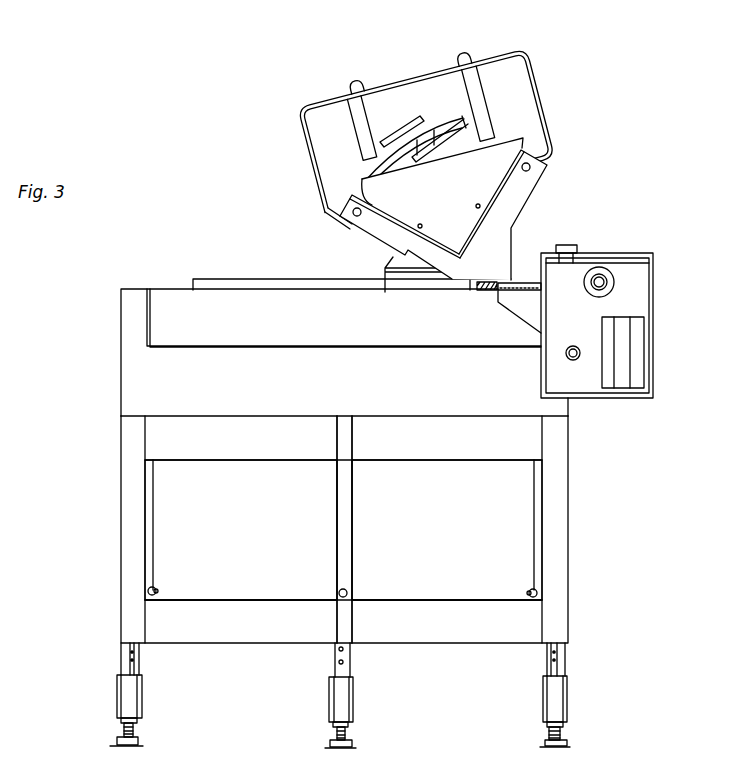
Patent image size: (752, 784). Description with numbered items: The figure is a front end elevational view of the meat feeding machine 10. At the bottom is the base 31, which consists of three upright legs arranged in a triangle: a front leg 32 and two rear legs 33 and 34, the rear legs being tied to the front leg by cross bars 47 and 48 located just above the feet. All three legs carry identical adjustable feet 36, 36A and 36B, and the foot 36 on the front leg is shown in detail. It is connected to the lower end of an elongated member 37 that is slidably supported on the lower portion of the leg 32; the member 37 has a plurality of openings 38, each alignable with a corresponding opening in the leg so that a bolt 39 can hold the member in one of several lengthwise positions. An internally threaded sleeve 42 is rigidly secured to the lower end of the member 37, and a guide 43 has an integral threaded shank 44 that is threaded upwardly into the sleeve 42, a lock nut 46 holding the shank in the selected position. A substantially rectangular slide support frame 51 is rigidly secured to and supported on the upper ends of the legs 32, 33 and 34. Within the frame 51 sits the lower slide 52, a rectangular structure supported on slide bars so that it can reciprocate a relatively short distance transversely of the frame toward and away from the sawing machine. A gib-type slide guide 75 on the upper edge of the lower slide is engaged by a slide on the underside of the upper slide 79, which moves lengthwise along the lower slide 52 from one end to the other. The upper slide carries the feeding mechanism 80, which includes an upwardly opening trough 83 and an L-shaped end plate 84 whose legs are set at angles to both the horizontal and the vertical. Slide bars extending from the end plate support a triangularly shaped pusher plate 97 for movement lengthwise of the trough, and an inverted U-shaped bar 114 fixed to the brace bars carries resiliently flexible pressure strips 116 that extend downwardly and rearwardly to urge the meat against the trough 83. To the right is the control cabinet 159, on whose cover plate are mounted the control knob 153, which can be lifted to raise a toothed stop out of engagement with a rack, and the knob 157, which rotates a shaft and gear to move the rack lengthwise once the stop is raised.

The feeding machine 10 is at (190, 110).
The base 31 is at (89, 484).
The front leg 32 is at (342, 528).
The rear leg 33 is at (132, 532).
The rear leg 34 is at (542, 533).
The adjustable foot 36 is at (330, 741).
The adjustable foot 36A is at (140, 741).
The adjustable foot 36B is at (545, 742).
The elongated member 37 is at (335, 663).
The openings 38 is at (345, 662).
The bolt 39 is at (347, 593).
The internally threaded sleeve 42 is at (338, 695).
The guide 43 is at (348, 743).
The threaded shank 44 is at (347, 737).
The lock nut 46 is at (332, 725).
The cross bar 47 is at (238, 605).
The cross bar 48 is at (447, 613).
The slide support frame 51 is at (121, 384).
The lower slide 52 is at (178, 288).
The slide guide 75 is at (300, 280).
The upper slide 79 is at (373, 248).
The feeding mechanism 80 is at (531, 198).
The trough 83 is at (368, 180).
The L-shaped end plate 84 is at (508, 217).
The pusher plate 97 is at (502, 157).
The U-shaped bar 114 is at (310, 106).
The pressure strips 116 is at (372, 105).
The control knob 153 is at (577, 246).
The knob 157 is at (608, 282).
The control cabinet 159 is at (617, 404).